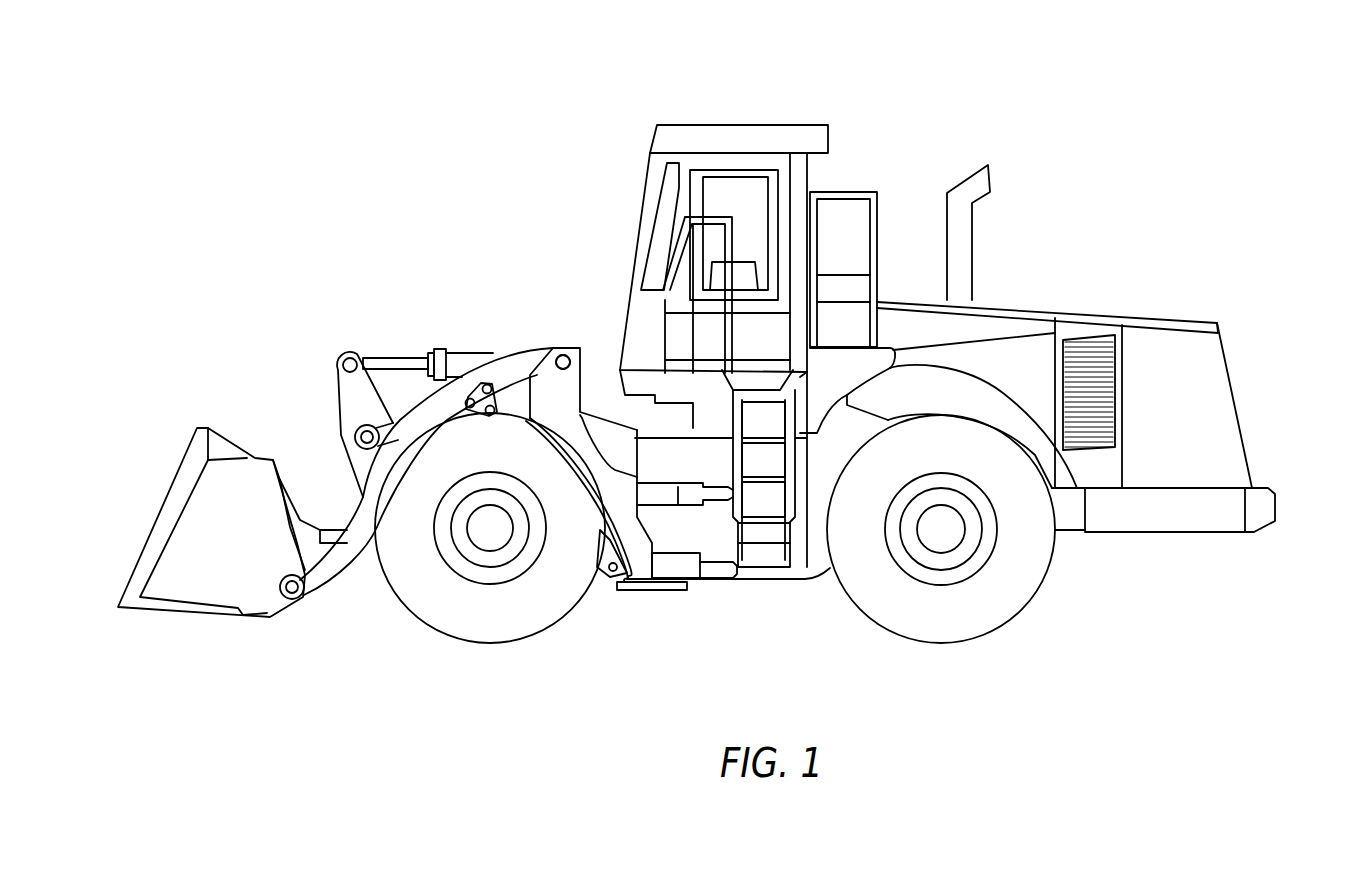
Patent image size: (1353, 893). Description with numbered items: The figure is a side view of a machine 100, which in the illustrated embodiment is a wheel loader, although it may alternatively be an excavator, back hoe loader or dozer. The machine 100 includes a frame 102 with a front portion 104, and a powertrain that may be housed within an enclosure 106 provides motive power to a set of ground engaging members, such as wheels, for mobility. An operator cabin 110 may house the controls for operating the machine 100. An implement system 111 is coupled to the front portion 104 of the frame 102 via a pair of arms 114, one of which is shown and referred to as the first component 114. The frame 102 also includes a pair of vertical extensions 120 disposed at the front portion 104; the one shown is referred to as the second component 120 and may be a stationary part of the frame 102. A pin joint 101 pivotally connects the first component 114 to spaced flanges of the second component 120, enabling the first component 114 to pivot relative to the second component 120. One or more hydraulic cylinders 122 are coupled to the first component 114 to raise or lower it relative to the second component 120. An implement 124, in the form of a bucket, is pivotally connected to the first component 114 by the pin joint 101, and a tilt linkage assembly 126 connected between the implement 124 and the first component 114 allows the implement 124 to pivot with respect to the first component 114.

The machine 100 is at (1228, 131).
The pin joint 101 is at (563, 352).
The frame 102 is at (906, 300).
The front portion 104 is at (602, 602).
The enclosure 106 is at (1158, 320).
The operator cabin 110 is at (752, 137).
The implement system 111 is at (335, 318).
The pair of arms 114 is at (523, 355).
The pair of vertical extensions 120 is at (575, 388).
The hydraulic cylinders 122 is at (452, 360).
The implement 124 is at (193, 585).
The tilt linkage assembly 126 is at (330, 533).